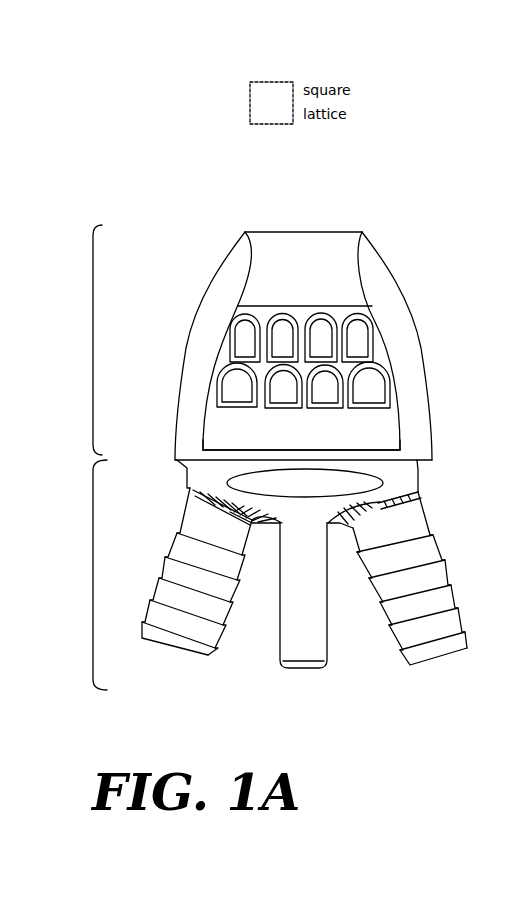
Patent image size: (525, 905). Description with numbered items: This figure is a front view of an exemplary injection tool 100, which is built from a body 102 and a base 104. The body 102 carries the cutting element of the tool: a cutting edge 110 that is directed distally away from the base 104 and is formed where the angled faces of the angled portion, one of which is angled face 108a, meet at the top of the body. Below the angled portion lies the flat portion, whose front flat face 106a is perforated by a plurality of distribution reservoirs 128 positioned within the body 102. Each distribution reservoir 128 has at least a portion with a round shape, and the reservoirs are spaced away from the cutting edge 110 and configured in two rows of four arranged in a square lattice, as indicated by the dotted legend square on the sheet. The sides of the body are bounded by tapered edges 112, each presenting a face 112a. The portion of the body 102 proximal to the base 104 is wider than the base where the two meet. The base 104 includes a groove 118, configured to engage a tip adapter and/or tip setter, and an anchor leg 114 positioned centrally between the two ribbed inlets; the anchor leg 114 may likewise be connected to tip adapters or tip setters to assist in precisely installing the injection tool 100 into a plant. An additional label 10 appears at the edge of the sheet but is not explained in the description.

The robotic system 10 is at (524, 128).
The injection tool 100 is at (156, 152).
The body 102 is at (93, 342).
The base 104 is at (93, 577).
The flat face 106a is at (295, 433).
The angled face 108a is at (293, 271).
The cutting edge 110 is at (296, 221).
The tapered edges 112 is at (238, 300).
The face of tapered edge 112a is at (203, 349).
The anchor leg 114 is at (303, 612).
The groove 118 is at (310, 485).
The distribution reservoirs 128 is at (362, 345).